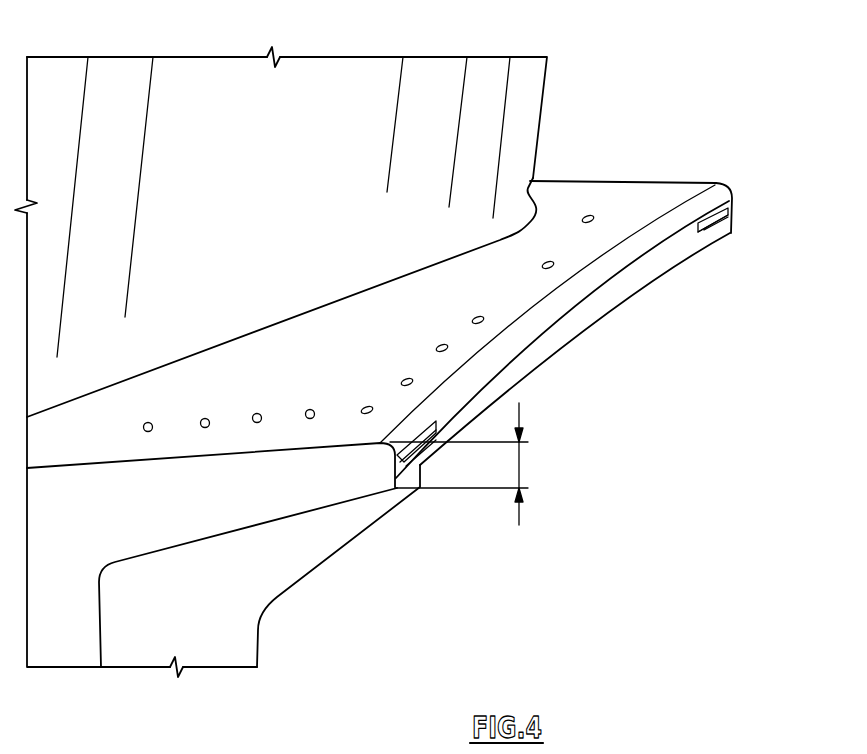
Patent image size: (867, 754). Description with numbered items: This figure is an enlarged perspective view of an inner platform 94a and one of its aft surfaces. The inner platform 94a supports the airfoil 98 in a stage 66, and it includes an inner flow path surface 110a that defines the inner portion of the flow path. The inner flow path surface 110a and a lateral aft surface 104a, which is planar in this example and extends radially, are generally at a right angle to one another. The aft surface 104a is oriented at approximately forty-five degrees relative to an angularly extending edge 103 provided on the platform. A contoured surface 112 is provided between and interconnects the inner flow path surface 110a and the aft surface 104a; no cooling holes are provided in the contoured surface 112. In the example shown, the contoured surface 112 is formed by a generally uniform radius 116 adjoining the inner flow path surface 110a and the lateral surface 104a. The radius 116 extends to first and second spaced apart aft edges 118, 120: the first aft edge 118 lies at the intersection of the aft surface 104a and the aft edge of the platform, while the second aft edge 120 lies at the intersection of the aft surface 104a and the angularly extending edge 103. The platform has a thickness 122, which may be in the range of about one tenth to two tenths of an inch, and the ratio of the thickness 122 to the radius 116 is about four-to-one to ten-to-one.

The stage 66 is at (692, 83).
The airfoil 98 is at (528, 112).
The angularly extending edge 103 is at (203, 503).
The inner flow path surface 110a is at (602, 193).
The inner platform 94a is at (710, 173).
The contoured surface 112 is at (728, 185).
The radius 116 is at (552, 308).
The lateral aft surface 104a is at (653, 263).
The first aft edge 118 is at (732, 223).
The second aft edge 120 is at (405, 455).
The platform thickness 122 is at (520, 467).